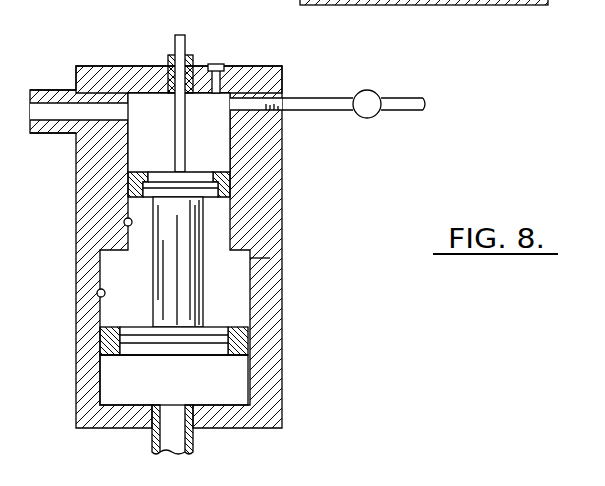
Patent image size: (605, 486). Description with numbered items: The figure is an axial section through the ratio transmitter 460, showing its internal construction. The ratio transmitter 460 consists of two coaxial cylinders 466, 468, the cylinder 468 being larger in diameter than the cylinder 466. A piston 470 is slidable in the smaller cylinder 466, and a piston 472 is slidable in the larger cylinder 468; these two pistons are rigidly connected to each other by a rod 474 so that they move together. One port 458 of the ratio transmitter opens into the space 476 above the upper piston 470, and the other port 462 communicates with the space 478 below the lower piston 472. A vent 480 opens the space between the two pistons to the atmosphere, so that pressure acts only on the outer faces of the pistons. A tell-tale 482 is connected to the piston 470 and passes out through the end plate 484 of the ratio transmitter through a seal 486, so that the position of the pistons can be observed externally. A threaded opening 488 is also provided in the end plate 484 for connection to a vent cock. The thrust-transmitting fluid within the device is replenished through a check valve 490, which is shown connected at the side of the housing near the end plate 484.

The port 458 is at (50, 92).
The ratio transmitter 460 is at (263, 193).
The port 462 is at (195, 443).
The cylinder 466 is at (124, 227).
The cylinder 468 is at (97, 294).
The piston 470 is at (200, 177).
The piston 472 is at (220, 346).
The rod 474 is at (193, 273).
The space 476 is at (212, 127).
The space 478 is at (113, 384).
The vent 480 is at (270, 258).
The tell-tale 482 is at (175, 43).
The end plate 484 is at (119, 68).
The seal 486 is at (191, 60).
The threaded opening 488 is at (218, 66).
The check valve 490 is at (376, 91).